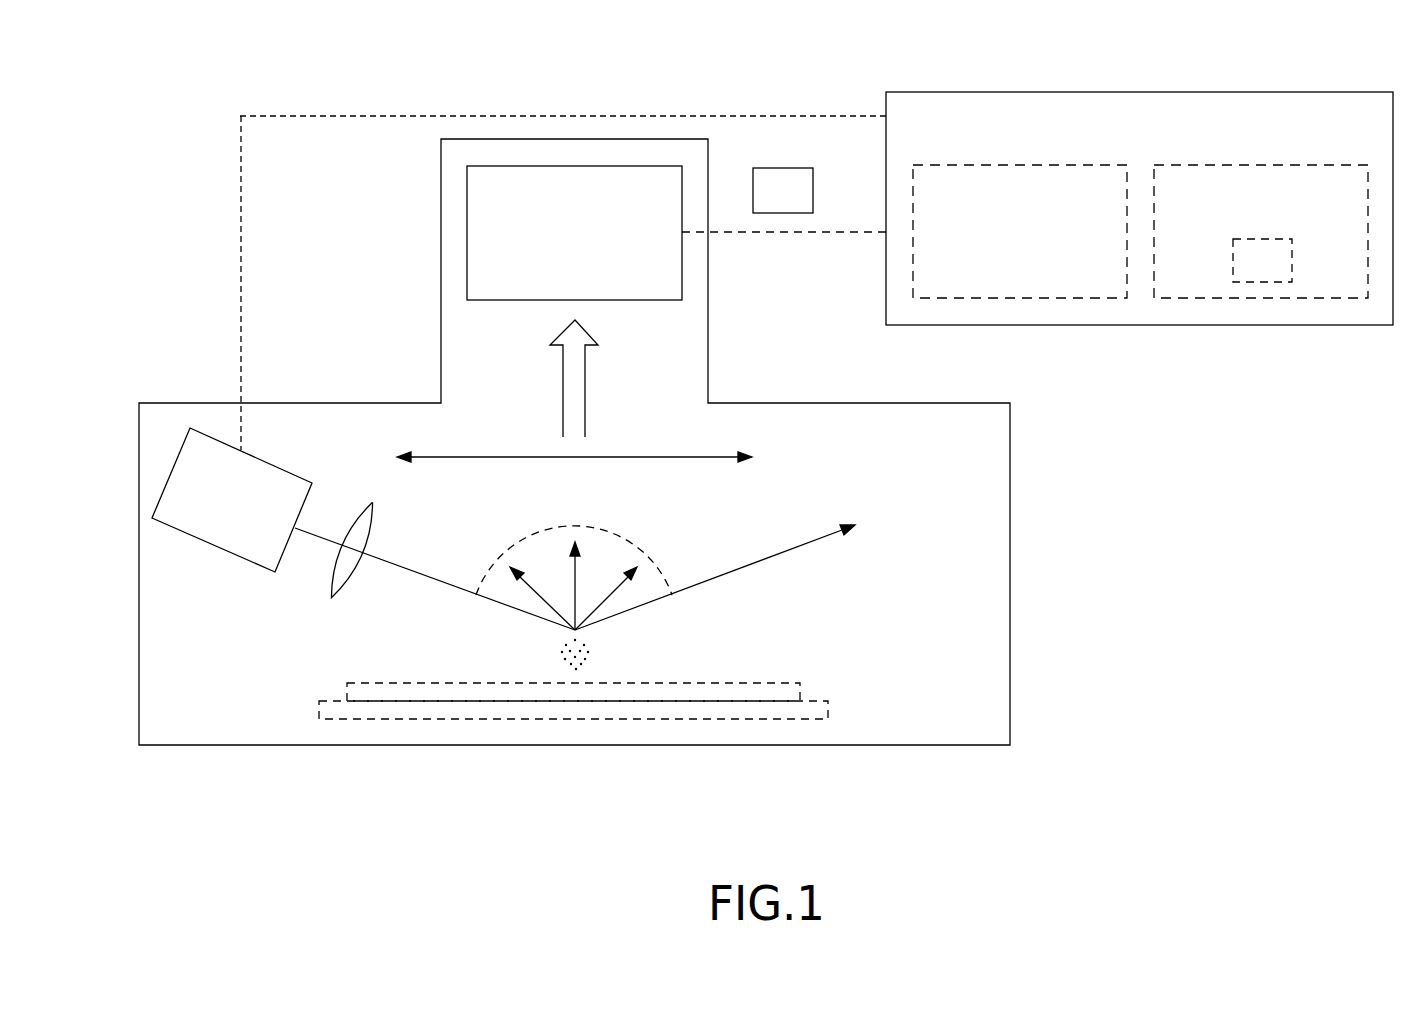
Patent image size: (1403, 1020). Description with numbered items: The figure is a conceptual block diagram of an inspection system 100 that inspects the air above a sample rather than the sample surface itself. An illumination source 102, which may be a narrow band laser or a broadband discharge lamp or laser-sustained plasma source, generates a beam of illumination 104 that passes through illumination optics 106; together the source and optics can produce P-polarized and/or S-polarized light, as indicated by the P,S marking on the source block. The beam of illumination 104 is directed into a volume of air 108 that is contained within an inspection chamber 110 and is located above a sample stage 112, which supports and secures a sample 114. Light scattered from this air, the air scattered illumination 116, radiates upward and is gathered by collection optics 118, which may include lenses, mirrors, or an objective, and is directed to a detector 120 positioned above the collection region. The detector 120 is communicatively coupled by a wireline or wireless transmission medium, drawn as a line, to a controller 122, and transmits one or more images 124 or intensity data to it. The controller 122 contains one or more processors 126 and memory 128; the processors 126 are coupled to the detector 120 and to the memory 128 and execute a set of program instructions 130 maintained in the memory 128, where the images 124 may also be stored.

The inspection system 100 is at (160, 33).
The illumination source 102 is at (265, 458).
The beam of illumination 104 is at (322, 540).
The illumination optics 106 is at (348, 580).
The volume of air 108 is at (548, 648).
The inspection chamber 110 is at (215, 403).
The sample stage 112 is at (828, 710).
The sample 114 is at (800, 693).
The air scattered illumination 116 is at (613, 600).
The collection optics 118 is at (498, 440).
The detector 120 is at (511, 195).
The controller 122 is at (928, 120).
The images 124 is at (784, 200).
The processors 126 is at (956, 195).
The memory 128 is at (1196, 195).
The program instructions 130 is at (1262, 260).